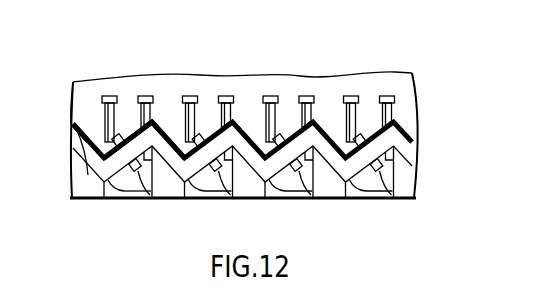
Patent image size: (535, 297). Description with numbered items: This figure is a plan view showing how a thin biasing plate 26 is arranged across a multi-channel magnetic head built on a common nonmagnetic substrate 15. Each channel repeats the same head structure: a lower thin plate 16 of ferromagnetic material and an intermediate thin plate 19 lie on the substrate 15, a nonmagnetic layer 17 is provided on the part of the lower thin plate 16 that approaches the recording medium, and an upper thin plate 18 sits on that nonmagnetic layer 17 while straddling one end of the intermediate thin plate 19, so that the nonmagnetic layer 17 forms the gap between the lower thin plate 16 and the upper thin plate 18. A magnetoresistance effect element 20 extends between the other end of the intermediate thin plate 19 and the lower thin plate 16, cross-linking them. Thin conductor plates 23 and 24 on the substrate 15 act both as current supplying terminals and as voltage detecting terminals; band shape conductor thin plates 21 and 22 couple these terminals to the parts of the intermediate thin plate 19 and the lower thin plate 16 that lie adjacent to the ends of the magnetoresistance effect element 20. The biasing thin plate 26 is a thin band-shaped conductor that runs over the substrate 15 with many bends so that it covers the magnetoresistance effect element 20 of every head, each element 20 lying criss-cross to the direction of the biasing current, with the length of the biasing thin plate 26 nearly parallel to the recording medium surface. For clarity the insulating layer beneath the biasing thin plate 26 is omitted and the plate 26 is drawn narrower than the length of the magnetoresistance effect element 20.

The nonmagnetic substrate 15 is at (407, 92).
The lower thin plate 16 is at (147, 174).
The nonmagnetic layer 17 is at (148, 193).
The upper thin plate 18 is at (115, 192).
The intermediate thin plate 19 is at (73, 127).
The magnetoresistance effect element 20 is at (121, 136).
The band shape conductor thin plate 21 is at (100, 114).
The band shape conductor thin plate 22 is at (156, 118).
The thin conductor plate 23 is at (111, 100).
The thin conductor plate 24 is at (144, 97).
The biasing thin plate 26 is at (404, 142).